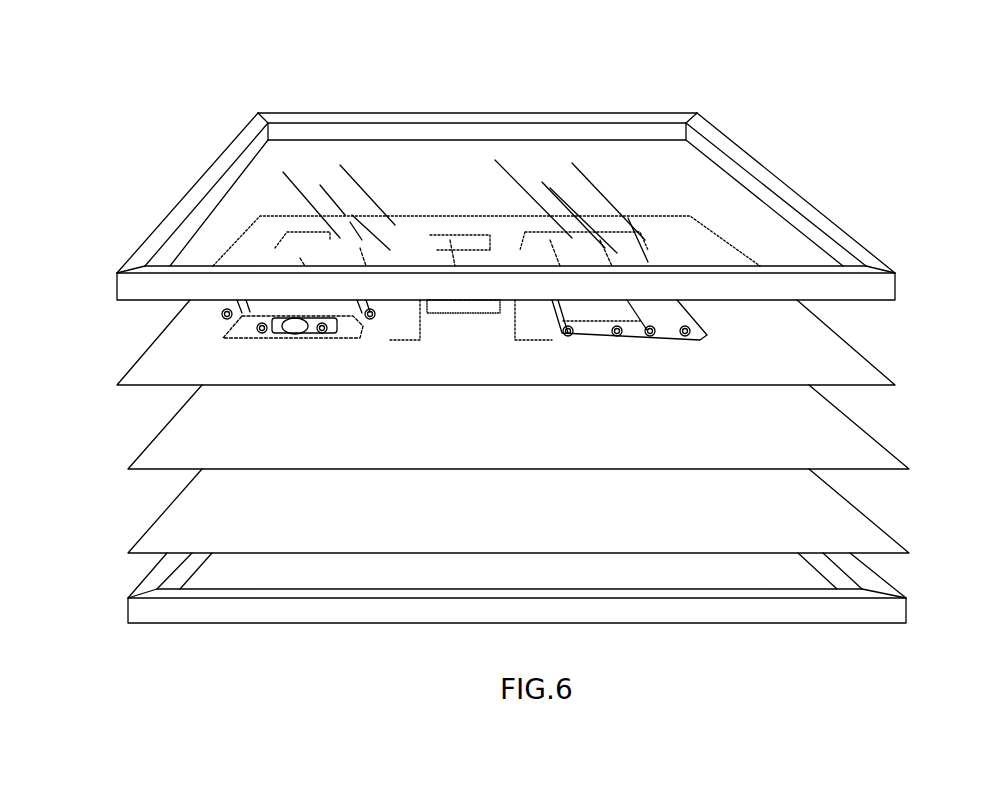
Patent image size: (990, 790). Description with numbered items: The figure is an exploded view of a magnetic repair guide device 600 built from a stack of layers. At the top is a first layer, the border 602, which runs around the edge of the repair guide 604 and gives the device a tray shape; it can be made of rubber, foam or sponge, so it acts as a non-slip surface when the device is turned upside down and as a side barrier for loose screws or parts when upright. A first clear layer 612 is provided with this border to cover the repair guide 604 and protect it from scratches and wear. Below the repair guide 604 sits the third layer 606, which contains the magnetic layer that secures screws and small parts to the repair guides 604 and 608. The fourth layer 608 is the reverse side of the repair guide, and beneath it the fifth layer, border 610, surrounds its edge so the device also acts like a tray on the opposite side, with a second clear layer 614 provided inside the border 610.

The magnetic repair guide device 600 is at (883, 115).
The border 602 is at (867, 287).
The repair guide 604 is at (852, 371).
The third layer 606 is at (862, 446).
The fourth layer 608 is at (865, 535).
The border 610 is at (883, 608).
The first clear layer 612 is at (610, 165).
The second clear layer 614 is at (758, 575).